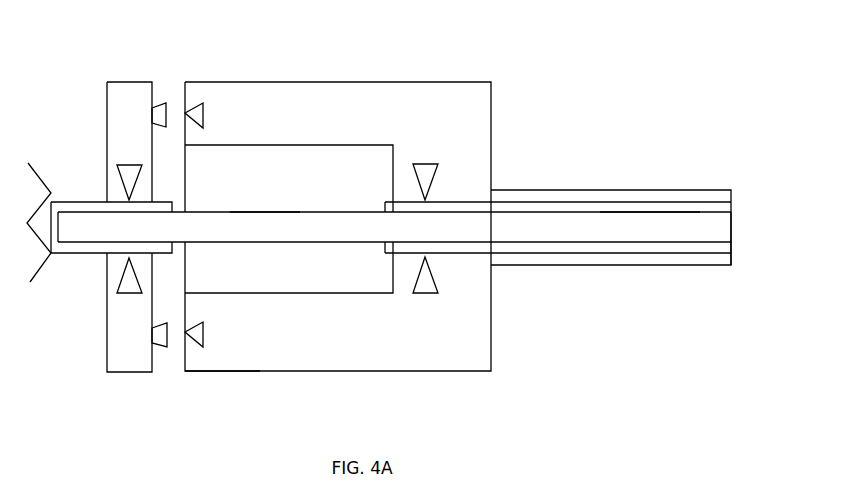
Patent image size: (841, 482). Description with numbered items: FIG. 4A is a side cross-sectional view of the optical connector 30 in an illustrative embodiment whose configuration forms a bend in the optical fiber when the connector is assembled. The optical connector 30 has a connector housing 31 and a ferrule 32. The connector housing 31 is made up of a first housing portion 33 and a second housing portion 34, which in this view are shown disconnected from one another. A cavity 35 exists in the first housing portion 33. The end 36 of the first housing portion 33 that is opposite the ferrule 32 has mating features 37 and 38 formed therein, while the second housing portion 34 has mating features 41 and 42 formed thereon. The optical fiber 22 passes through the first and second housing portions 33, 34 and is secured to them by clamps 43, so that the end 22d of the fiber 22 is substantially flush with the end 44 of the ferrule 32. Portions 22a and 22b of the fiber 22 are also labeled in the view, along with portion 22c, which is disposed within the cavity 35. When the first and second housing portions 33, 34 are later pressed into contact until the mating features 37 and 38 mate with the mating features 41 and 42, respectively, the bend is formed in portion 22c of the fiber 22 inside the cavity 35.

The optical connector 30 is at (590, 57).
The connector housing 31 is at (373, 63).
The ferrule 32 is at (553, 190).
The first housing portion 33 is at (303, 82).
The second housing portion 34 is at (125, 82).
The cavity 35 is at (288, 145).
The end of the first housing portion 36 is at (184, 366).
The mating feature 37 is at (203, 110).
The mating feature 38 is at (203, 330).
The mating feature 41 is at (160, 103).
The mating feature 42 is at (158, 348).
The clamps 43 is at (133, 164).
The end of the ferrule 44 is at (731, 253).
The optical fiber 22 is at (97, 201).
The shaft first portion 22a is at (617, 223).
The shaft sleeve portion 22b is at (96, 254).
The bent portion 22c is at (237, 210).
The end of the fiber 22d is at (731, 222).